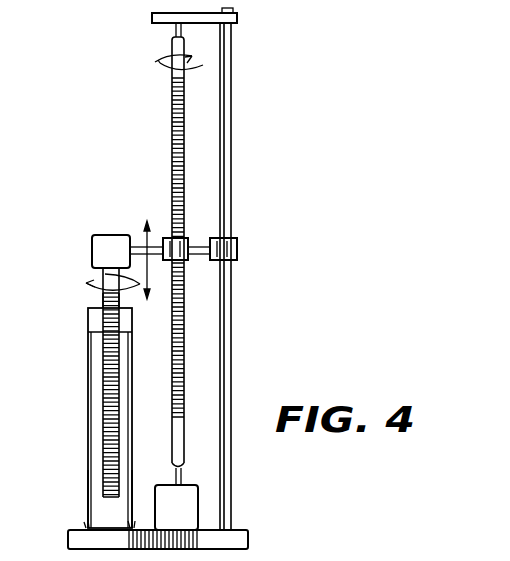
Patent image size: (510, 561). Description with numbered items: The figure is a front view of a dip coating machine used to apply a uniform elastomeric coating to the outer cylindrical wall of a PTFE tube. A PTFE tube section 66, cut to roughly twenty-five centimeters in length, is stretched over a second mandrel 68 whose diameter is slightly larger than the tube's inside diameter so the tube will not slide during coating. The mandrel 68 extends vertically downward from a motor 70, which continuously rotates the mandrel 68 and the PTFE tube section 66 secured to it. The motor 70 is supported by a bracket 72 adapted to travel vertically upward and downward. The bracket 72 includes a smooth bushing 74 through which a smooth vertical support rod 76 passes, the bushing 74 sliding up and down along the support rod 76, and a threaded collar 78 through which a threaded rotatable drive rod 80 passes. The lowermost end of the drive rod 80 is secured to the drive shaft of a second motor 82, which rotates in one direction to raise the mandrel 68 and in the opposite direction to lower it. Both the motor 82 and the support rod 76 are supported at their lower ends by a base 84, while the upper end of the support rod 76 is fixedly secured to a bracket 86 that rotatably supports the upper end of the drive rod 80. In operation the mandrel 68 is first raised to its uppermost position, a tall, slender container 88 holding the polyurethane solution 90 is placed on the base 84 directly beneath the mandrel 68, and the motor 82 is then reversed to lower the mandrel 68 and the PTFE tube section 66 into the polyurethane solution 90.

The PTFE tube section 66 is at (102, 382).
The second mandrel 68 is at (104, 278).
The motor 70 is at (115, 235).
The bracket 72 is at (200, 247).
The smooth bushing 74 is at (238, 250).
The smooth vertical support rod 76 is at (231, 160).
The threaded collar 78 is at (164, 240).
The threaded rotatable drive rod 80 is at (172, 112).
The second motor 82 is at (199, 497).
The base 84 is at (240, 530).
The bracket 86 is at (155, 23).
The tall, slender container 88 is at (89, 488).
The polyurethane solution 90 is at (89, 452).